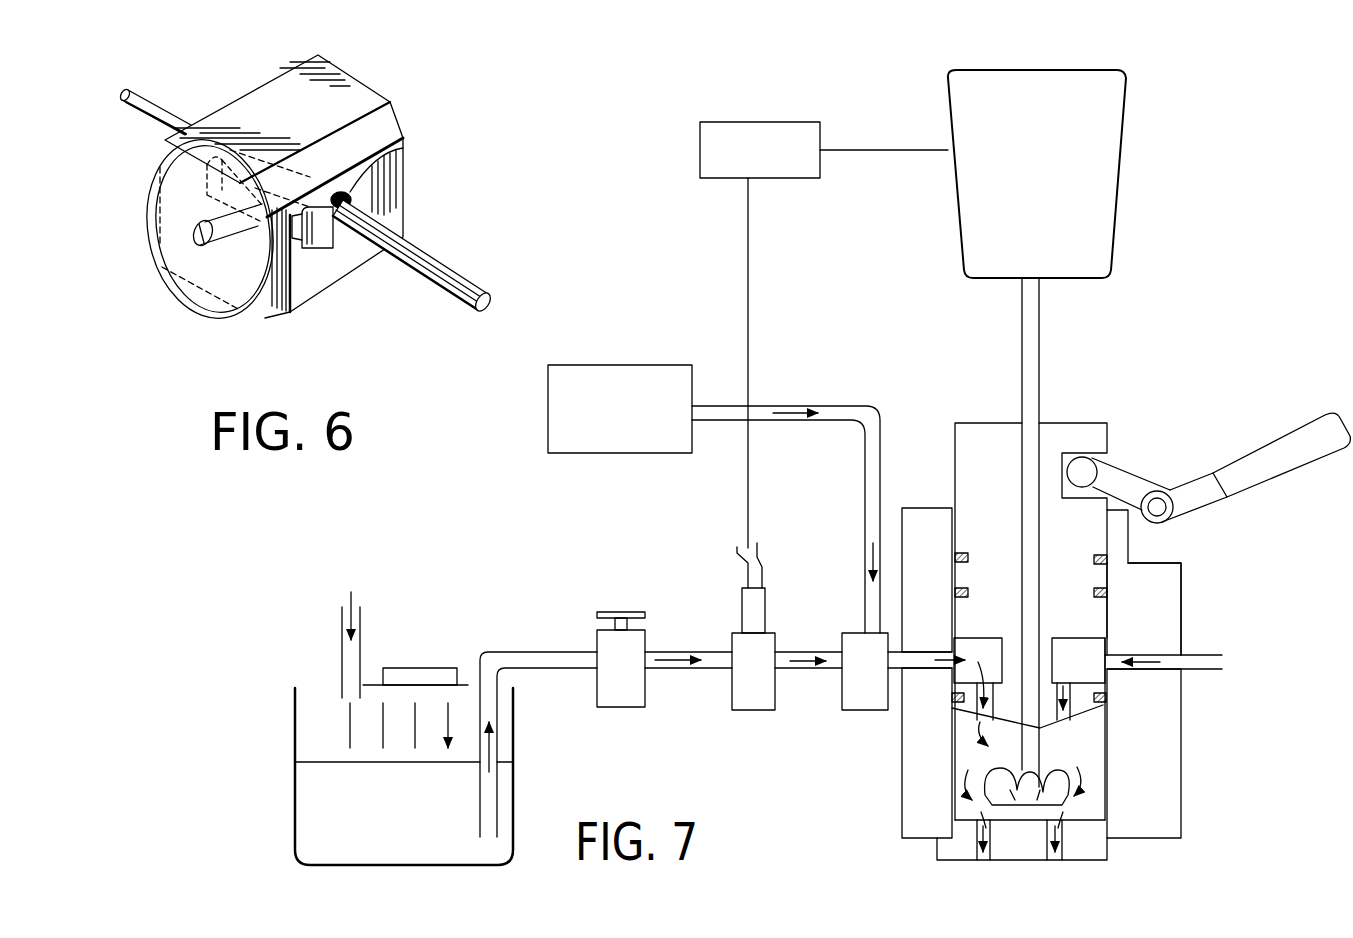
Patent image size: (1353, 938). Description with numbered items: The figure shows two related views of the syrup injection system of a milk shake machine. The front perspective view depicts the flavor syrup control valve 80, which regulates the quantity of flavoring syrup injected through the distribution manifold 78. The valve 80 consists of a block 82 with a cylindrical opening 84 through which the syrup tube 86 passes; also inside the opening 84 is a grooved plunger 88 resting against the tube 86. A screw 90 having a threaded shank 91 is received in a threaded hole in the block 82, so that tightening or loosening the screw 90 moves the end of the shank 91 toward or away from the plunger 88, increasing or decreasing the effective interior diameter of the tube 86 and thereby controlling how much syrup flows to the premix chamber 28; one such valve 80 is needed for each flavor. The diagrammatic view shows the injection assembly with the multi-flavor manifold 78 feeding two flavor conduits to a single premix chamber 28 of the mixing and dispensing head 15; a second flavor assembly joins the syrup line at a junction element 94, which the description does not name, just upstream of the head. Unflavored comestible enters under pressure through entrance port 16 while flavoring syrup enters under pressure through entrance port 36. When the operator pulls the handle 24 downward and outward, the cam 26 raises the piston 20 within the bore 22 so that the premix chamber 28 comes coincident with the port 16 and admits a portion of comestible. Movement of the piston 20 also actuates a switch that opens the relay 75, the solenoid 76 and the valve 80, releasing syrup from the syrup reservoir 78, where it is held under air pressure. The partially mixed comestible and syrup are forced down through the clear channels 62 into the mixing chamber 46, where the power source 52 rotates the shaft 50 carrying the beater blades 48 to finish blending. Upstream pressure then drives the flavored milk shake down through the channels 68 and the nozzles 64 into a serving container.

In FIG. 7, the mixing and dispensing head 15 is at (1186, 614).
In FIG. 7, the entrance port 16 is at (1155, 654).
In FIG. 7, the piston 20 is at (983, 440).
In FIG. 7, the bore 22 is at (1108, 704).
In FIG. 7, the handle 24 is at (1300, 440).
In FIG. 7, the cam 26 is at (1088, 464).
In FIG. 7, the premix chamber 28 is at (1031, 584).
In FIG. 7, the entrance port 36 is at (906, 661).
In FIG. 7, the mixing chamber 46 is at (972, 748).
In FIG. 7, the beater blades 48 is at (986, 787).
In FIG. 7, the shaft 50 is at (1033, 352).
In FIG. 7, the power source 52 is at (1127, 160).
In FIG. 7, the channels 62 is at (996, 692).
In FIG. 7, the nozzles 64 is at (1091, 849).
In FIG. 7, the channels 68 is at (967, 849).
In FIG. 7, the relay 75 is at (753, 120).
In FIG. 7, the solenoid 76 is at (761, 600).
In FIG. 7, the syrup reservoir / distribution manifold 78 is at (747, 688).
In FIG. 6, the flavor syrup control valve 80 is at (125, 222).
In FIG. 7, the flavor syrup control valve 80 is at (622, 690).
In FIG. 6, the block 82 is at (237, 97).
In FIG. 6, the cylindrical opening 84 is at (353, 192).
In FIG. 6, the syrup tube 86 is at (413, 240).
In FIG. 7, the syrup tube 86 is at (552, 649).
In FIG. 6, the grooved plunger 88 is at (325, 250).
In FIG. 6, the screw 90 is at (192, 245).
In FIG. 6, the threaded shank 91 is at (258, 218).
In FIG. 7, the mixing valve 94 is at (862, 652).